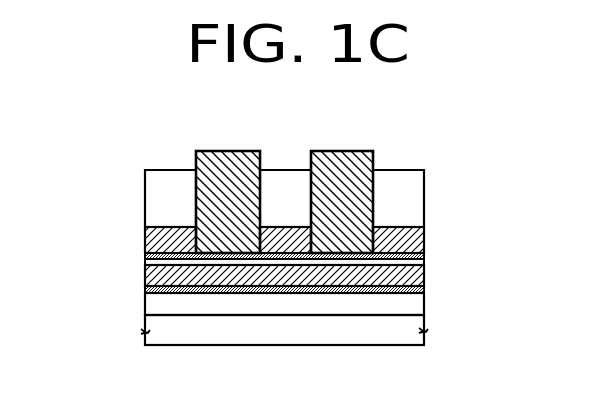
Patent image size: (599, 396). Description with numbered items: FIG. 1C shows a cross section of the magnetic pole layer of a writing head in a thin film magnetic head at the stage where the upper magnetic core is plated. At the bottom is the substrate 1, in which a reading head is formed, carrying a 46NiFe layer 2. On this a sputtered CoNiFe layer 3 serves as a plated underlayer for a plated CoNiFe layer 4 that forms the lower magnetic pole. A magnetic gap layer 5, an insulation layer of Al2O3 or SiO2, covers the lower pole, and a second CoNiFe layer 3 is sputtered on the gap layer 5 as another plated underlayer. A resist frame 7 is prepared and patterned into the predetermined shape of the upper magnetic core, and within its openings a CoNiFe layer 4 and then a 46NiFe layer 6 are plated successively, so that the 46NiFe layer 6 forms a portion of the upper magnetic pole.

The substrate 1 is at (415, 340).
The 46NiFe layer 2 is at (415, 305).
The CoNiFe layer (plated underlayer) 3 is at (424, 290).
The CoNiFe layer 4 is at (424, 275).
The magnetic gap layer 5 is at (424, 263).
The 46NiFe layer 6 is at (328, 170).
The resist frame 7 is at (157, 198).